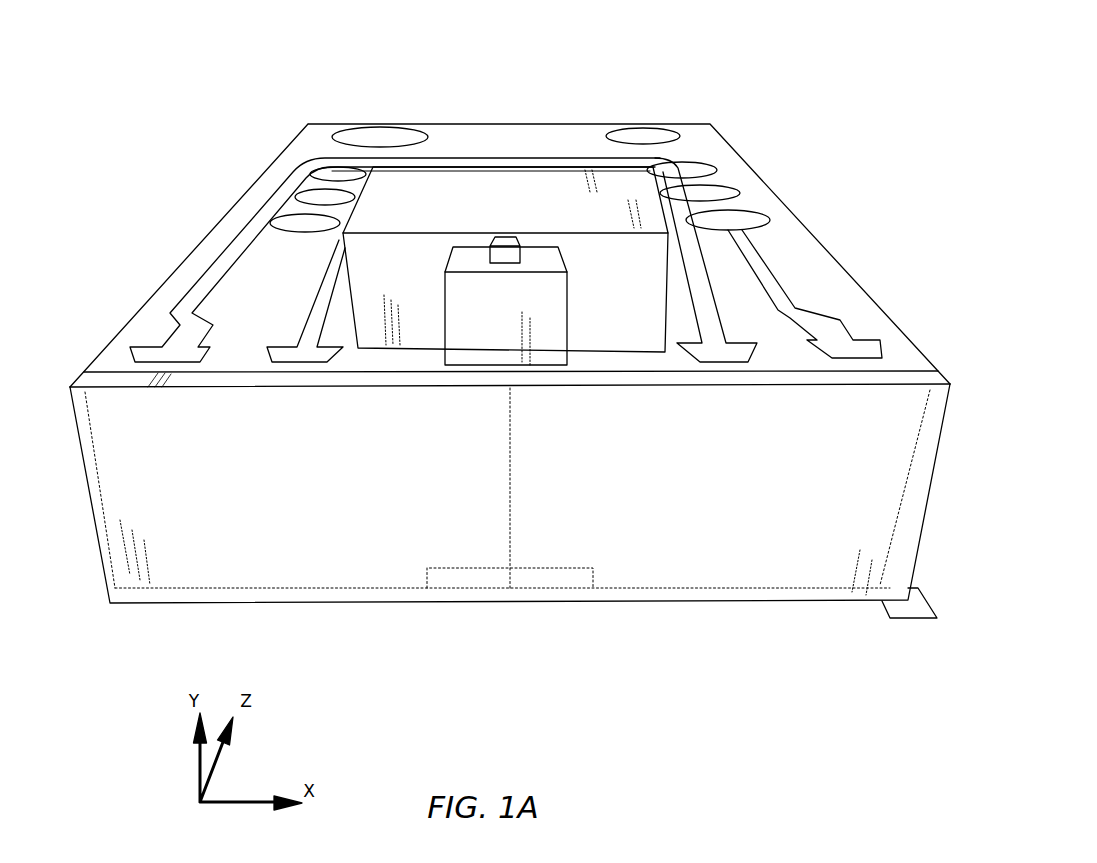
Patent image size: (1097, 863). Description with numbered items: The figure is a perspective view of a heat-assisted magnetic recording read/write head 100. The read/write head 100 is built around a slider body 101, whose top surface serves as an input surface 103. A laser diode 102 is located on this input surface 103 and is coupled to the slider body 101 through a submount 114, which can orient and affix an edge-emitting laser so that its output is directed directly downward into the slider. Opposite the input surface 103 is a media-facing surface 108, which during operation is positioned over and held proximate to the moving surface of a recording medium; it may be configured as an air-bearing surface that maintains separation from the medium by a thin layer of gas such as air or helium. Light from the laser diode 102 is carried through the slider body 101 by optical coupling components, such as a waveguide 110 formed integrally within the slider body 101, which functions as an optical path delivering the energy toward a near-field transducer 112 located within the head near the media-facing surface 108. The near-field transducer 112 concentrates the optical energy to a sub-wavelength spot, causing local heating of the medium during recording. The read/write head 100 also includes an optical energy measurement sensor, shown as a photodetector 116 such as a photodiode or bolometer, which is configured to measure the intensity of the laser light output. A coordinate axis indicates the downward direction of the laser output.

The HAMR read/write head 100 is at (726, 58).
The slider body 101 is at (282, 157).
The laser diode 102 is at (568, 300).
The input surface 103 is at (146, 327).
The media-facing surface 108 is at (926, 622).
The waveguide 110 is at (511, 560).
The near-field transducer 112 is at (470, 590).
The submount 114 is at (428, 183).
The photodetector 116 is at (510, 236).